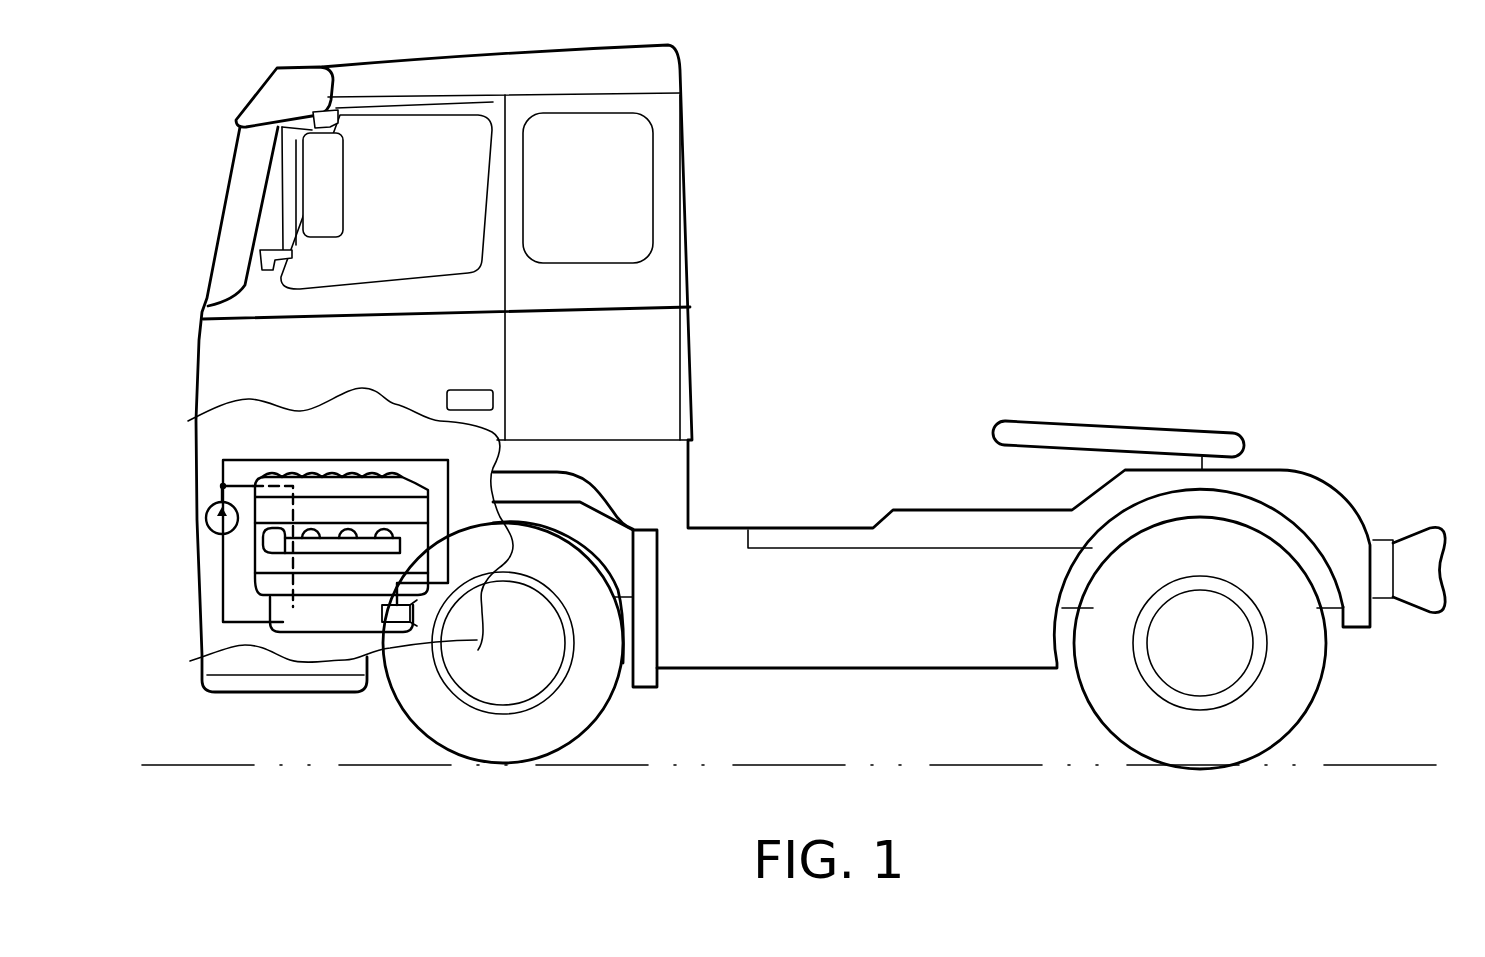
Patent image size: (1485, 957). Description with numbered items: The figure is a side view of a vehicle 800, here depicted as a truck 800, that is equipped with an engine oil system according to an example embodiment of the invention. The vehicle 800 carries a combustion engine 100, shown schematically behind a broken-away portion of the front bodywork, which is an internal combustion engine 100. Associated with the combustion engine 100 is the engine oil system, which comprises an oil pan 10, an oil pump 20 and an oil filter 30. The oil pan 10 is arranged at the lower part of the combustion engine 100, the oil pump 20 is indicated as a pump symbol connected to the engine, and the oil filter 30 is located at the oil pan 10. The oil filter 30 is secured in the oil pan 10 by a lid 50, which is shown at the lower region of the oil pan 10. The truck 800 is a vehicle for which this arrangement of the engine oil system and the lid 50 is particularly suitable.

The vehicle 800 is at (779, 125).
The combustion engine 100 is at (333, 562).
The oil pan 10 is at (345, 662).
The oil pump 20 is at (207, 518).
The oil filter 30 is at (431, 621).
The lid 50 is at (413, 622).